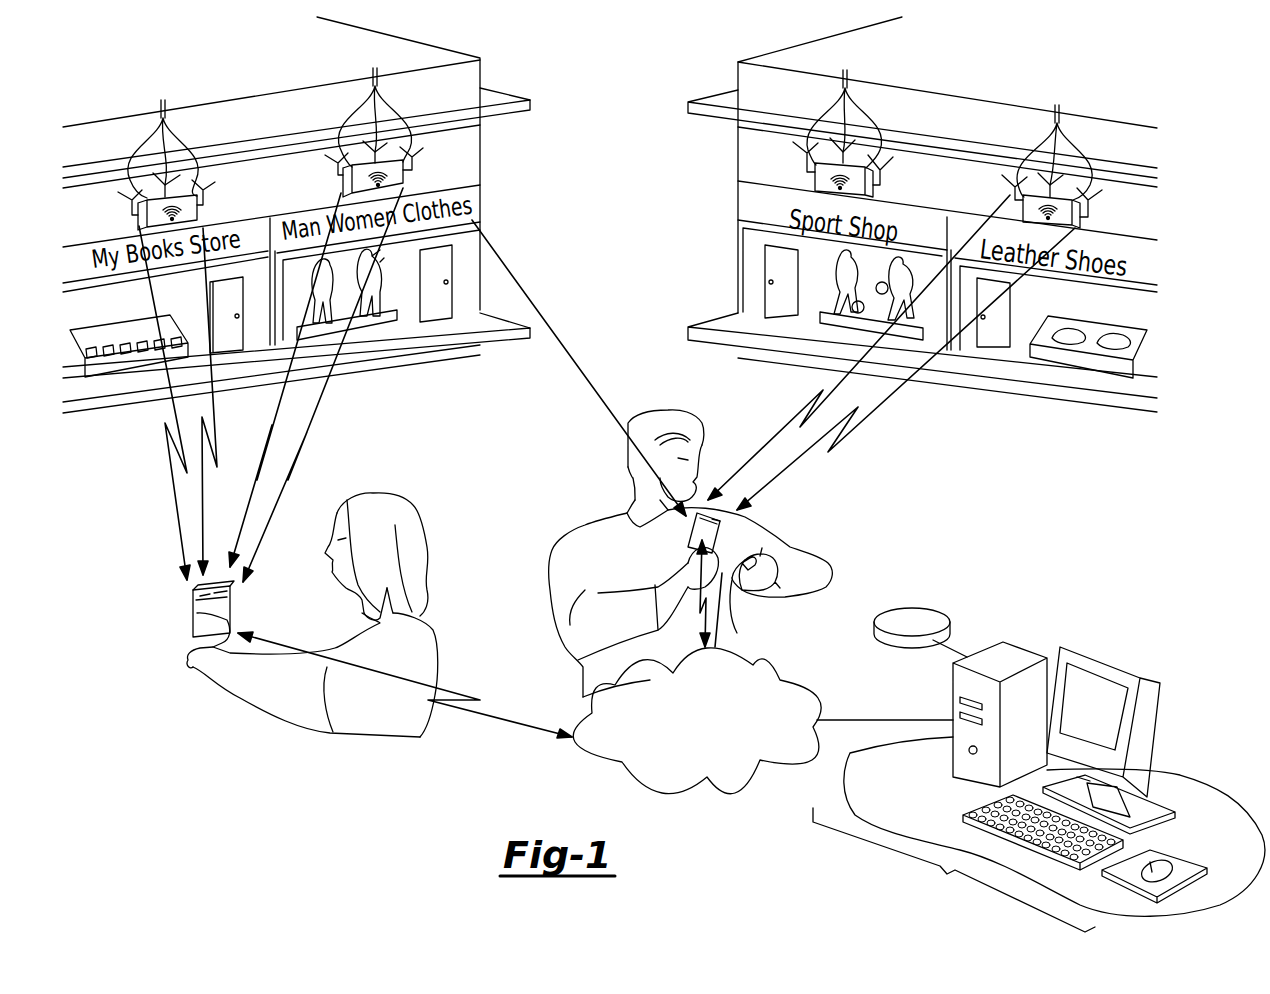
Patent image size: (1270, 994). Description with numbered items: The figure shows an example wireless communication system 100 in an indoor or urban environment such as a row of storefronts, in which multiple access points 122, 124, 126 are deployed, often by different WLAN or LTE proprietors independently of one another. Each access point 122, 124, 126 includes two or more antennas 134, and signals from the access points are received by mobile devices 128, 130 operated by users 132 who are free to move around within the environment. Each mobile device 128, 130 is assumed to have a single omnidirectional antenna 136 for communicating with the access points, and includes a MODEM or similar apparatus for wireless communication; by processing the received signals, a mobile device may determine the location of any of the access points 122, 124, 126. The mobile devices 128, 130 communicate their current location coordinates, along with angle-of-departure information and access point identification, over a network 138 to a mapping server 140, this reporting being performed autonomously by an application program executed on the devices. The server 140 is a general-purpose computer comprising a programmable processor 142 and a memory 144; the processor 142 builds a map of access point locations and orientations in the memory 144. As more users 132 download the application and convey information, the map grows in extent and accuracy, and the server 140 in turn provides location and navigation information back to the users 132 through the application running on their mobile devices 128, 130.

The wireless communication system 100 is at (1168, 79).
The access point 122 is at (140, 218).
The access point 124 is at (350, 190).
The access point 126 is at (1085, 224).
The mobile device 128 is at (715, 496).
The mobile device 130 is at (223, 608).
The user 132 is at (593, 510).
The antenna 134 is at (610, 119).
The omnidirectional antenna 136 is at (722, 530).
The network 138 is at (762, 663).
The mapping server 140 is at (1039, 834).
The programmable processor 142 is at (1030, 652).
The memory 144 is at (928, 603).